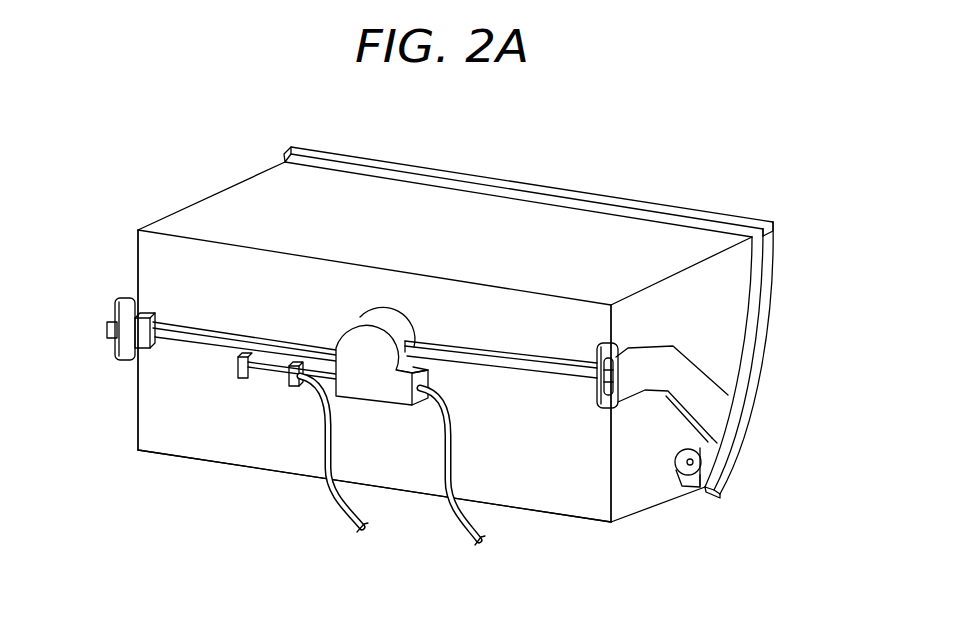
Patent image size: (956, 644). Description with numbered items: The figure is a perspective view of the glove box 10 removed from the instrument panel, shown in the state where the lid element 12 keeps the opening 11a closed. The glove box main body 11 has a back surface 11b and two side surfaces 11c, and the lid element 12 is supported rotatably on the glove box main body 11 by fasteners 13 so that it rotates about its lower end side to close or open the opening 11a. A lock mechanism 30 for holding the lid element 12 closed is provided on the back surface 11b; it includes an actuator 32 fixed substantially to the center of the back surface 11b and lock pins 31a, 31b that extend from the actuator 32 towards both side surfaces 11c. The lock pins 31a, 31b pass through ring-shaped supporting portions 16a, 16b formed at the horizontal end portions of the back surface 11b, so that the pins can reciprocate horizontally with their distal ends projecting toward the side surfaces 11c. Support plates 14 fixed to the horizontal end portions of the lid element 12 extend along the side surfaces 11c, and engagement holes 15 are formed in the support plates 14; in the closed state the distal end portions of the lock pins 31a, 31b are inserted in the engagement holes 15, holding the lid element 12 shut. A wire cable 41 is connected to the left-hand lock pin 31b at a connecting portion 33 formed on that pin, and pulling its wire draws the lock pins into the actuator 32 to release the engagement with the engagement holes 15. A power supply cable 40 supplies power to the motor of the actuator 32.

The glove box 10 is at (528, 164).
The glove box main body 11 is at (612, 228).
The opening 11a is at (763, 250).
The back surface 11b is at (583, 508).
The side surfaces 11c is at (137, 402).
The lid element 12 is at (761, 357).
The fasteners 13 is at (688, 486).
The support plates 14 is at (120, 300).
The engagement holes 15 is at (137, 318).
The ring-shaped supporting portion 16a is at (594, 398).
The ring-shaped supporting portion 16b is at (157, 348).
The lock mechanism 30 is at (230, 428).
The lock pin 31a is at (496, 350).
The lock pin 31b is at (243, 338).
The actuator 32 is at (345, 330).
The connecting portion 33 is at (237, 366).
The power supply cable 40 is at (450, 460).
The wire cable 41 is at (332, 444).